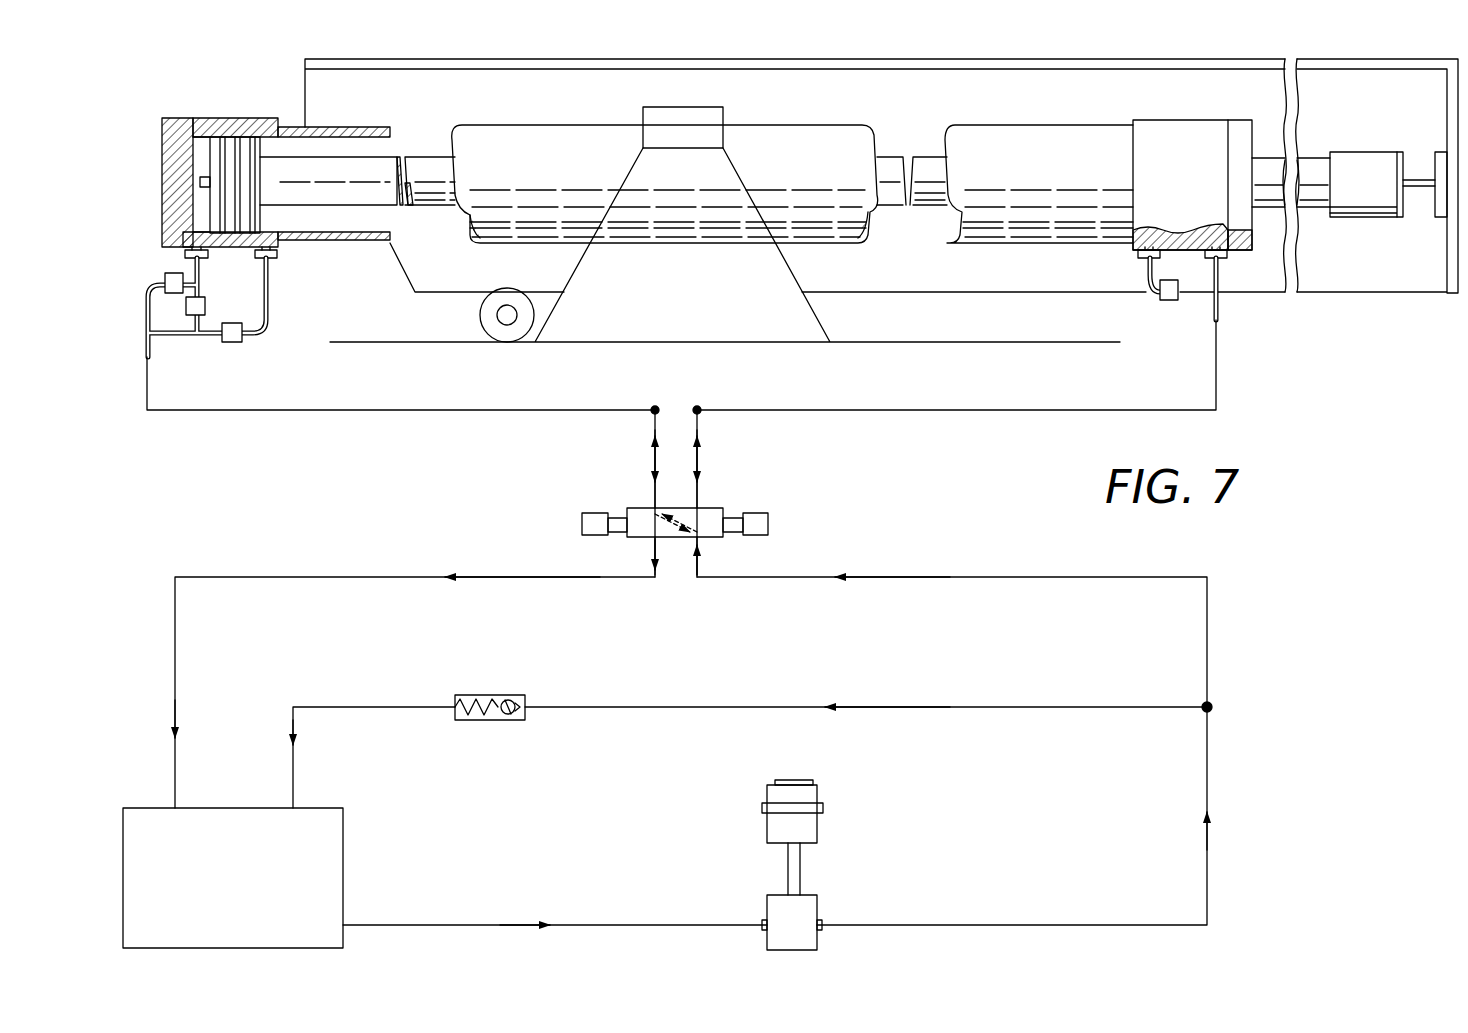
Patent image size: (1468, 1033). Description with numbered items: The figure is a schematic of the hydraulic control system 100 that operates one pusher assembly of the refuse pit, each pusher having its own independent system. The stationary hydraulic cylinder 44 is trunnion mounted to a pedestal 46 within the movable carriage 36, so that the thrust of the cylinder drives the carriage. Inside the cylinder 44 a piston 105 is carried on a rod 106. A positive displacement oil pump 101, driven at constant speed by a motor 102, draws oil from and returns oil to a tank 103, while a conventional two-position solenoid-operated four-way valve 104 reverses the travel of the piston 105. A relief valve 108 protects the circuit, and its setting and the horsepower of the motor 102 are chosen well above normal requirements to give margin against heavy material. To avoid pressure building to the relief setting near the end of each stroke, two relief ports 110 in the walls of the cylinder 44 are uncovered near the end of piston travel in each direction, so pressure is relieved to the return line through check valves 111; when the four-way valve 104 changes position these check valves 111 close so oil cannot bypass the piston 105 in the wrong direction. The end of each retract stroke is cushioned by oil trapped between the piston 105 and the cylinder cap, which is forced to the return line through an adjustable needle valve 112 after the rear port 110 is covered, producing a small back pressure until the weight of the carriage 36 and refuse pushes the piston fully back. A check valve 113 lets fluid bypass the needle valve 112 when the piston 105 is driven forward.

The movable carriage 36 is at (1190, 52).
The hydraulic cylinder 44 is at (245, 118).
The pedestal 46 is at (690, 286).
The hydraulic control system 100 is at (852, 553).
The positive displacement oil pump 101 is at (818, 905).
The motor 102 is at (818, 820).
The tank 103 is at (345, 822).
The four-way valve 104 is at (712, 507).
The piston 105 is at (222, 145).
The rod 106 is at (348, 163).
The relief valve 108 is at (455, 697).
The relief ports 110 is at (282, 245).
The check valves 111 is at (236, 340).
The adjustable needle valve 112 is at (203, 306).
The check valve 113 is at (165, 282).